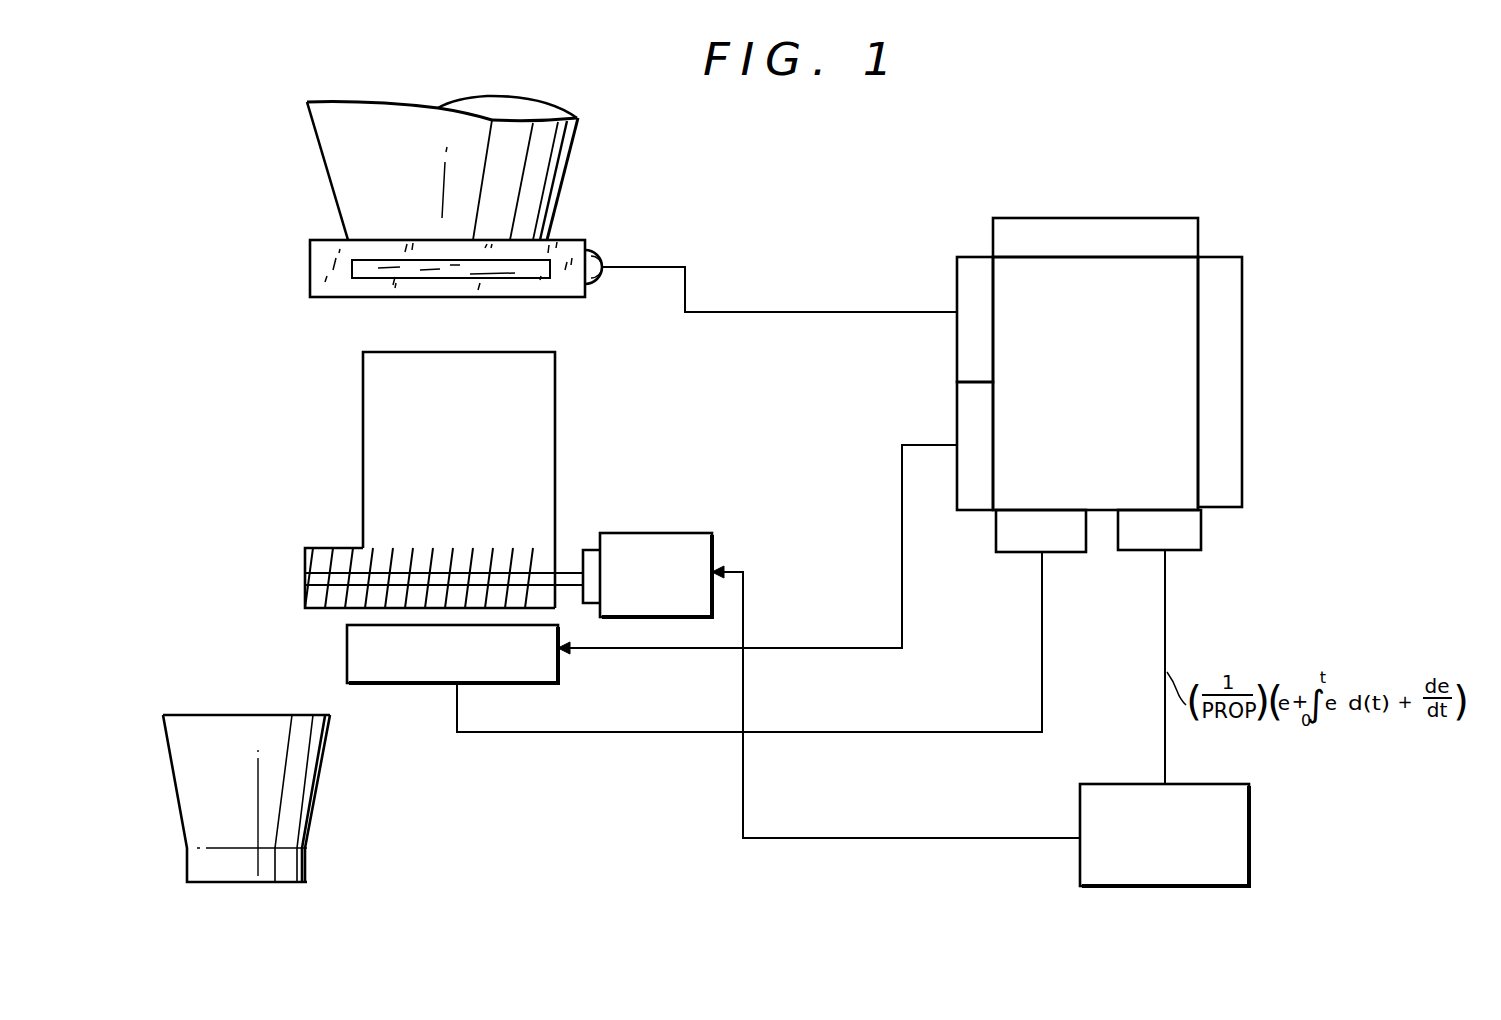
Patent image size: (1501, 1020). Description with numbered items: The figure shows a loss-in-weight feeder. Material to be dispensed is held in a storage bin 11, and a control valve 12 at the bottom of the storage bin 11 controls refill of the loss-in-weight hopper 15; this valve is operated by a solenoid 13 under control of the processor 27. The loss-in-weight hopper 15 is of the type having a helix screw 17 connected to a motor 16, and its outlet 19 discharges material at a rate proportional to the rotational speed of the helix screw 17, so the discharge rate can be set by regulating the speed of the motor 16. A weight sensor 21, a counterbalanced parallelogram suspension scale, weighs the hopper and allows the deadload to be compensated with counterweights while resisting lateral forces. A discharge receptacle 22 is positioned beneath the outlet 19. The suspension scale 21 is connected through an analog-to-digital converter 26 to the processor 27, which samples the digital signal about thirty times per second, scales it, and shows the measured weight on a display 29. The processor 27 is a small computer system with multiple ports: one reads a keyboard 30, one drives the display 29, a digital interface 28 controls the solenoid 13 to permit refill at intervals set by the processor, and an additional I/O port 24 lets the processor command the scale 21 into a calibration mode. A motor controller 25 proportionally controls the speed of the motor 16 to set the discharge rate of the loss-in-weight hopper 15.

The storage bin 11 is at (567, 163).
The control valve 12 is at (310, 253).
The solenoid 13 is at (603, 252).
The loss-in-weight hopper 15 is at (555, 390).
The motor 16 is at (700, 533).
The helix screw 17 is at (483, 553).
The outlet 19 is at (293, 572).
The weight sensor 21 is at (545, 687).
The discharge receptacle 22 is at (317, 797).
The I/O port 24 is at (957, 410).
The motor controller 25 is at (1080, 800).
The analog-to-digital converter 26 is at (1007, 553).
The processor 27 is at (1114, 413).
The digital interface 28 is at (957, 275).
The display 29 is at (1240, 285).
The keyboard 30 is at (1153, 218).